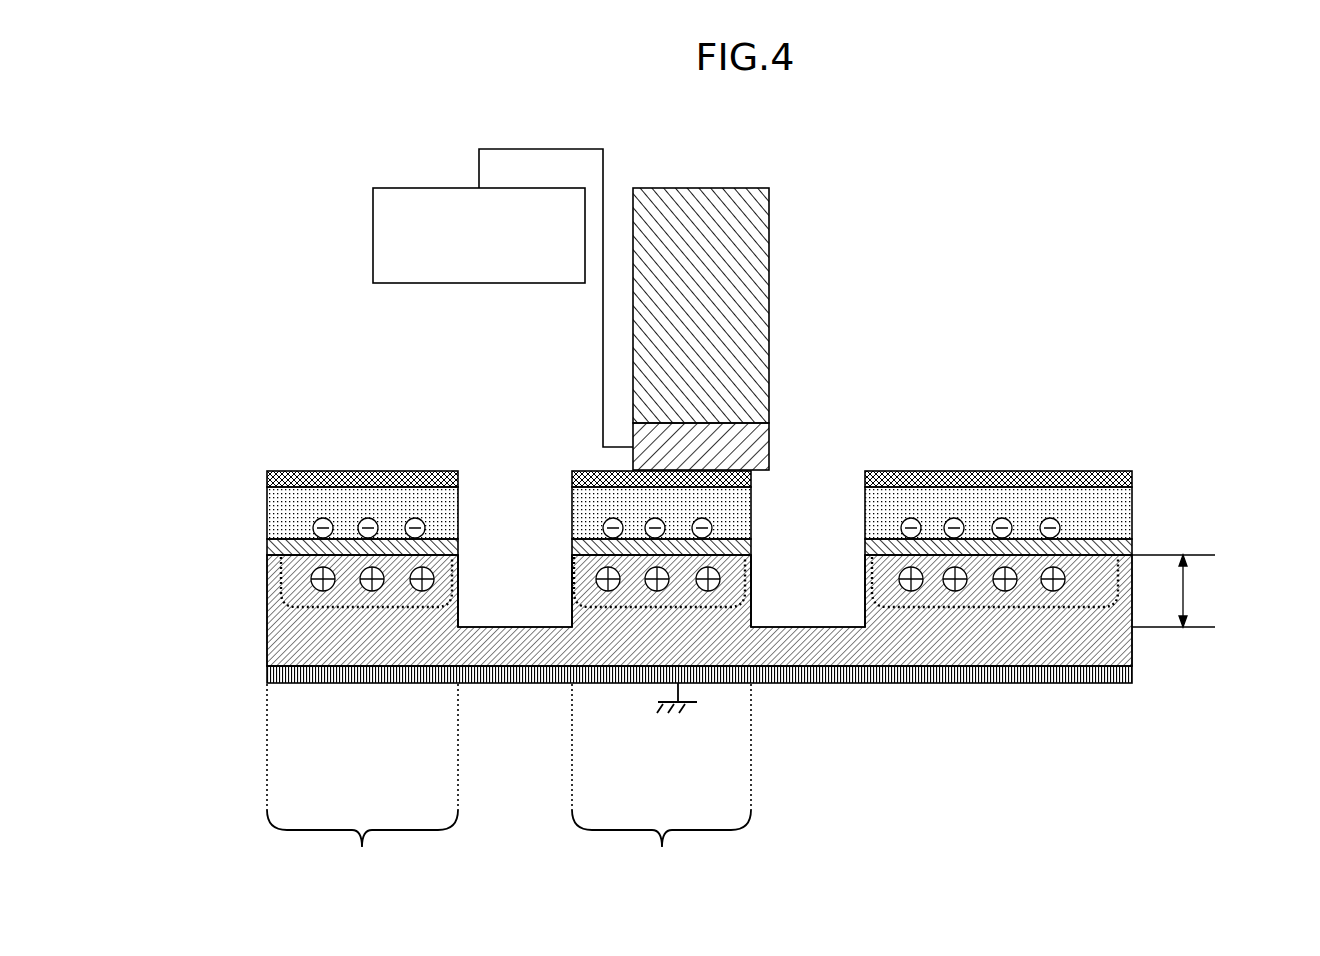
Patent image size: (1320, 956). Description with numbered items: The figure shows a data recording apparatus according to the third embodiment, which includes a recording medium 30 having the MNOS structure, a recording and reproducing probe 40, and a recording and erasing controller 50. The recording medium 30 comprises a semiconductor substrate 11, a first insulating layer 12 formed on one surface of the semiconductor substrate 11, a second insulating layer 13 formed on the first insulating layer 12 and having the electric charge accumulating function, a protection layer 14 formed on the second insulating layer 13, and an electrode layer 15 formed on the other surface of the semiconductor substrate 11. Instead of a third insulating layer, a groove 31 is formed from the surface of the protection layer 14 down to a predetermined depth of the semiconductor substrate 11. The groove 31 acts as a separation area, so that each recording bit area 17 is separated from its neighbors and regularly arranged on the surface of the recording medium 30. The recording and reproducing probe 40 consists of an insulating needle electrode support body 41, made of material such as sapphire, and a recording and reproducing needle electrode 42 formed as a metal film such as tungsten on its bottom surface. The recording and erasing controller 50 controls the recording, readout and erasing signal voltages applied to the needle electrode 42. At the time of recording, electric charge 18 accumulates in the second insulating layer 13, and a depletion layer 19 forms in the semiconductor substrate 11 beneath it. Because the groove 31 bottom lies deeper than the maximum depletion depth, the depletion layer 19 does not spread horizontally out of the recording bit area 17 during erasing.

The semiconductor substrate 11 is at (1123, 648).
The first insulating layer 12 is at (1123, 545).
The second insulating layer 13 is at (1123, 500).
The protection layer 14 is at (360, 471).
The electrode layer 15 is at (1123, 675).
The recording bit area 17 is at (509, 782).
The electric charge 18 is at (612, 517).
The depletion layer 19 is at (732, 607).
The recording medium 30 is at (240, 608).
The groove 31 is at (459, 588).
The recording and reproducing probe 40 is at (706, 175).
The needle electrode support body 41 is at (760, 212).
The recording and reproducing needle electrode 42 is at (769, 447).
The recording and erasing controller 50 is at (372, 235).